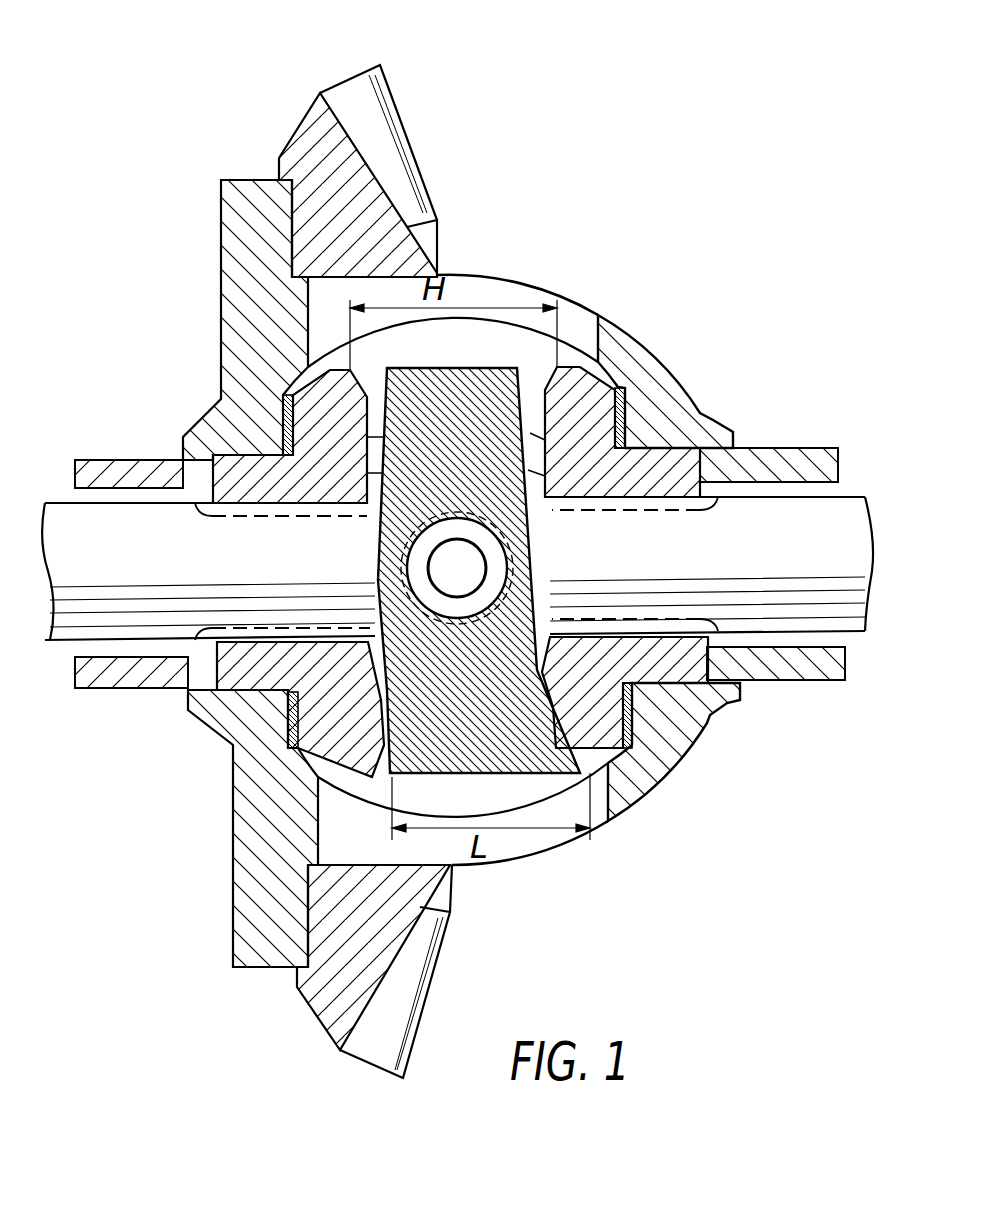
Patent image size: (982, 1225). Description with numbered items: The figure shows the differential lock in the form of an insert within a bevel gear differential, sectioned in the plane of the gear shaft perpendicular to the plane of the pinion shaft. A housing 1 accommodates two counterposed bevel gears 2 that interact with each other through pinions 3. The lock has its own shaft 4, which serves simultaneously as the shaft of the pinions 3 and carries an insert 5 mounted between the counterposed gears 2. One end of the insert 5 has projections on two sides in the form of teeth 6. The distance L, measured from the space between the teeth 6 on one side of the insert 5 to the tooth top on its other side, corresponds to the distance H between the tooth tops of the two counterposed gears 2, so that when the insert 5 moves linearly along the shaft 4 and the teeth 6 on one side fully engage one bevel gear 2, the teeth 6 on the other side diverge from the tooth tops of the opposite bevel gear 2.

The housing 1 is at (243, 233).
The bevel gear 2 is at (253, 687).
The pinion 3 is at (700, 726).
The shaft 4 is at (474, 575).
The insert 5 is at (497, 400).
The teeth 6 is at (630, 748).